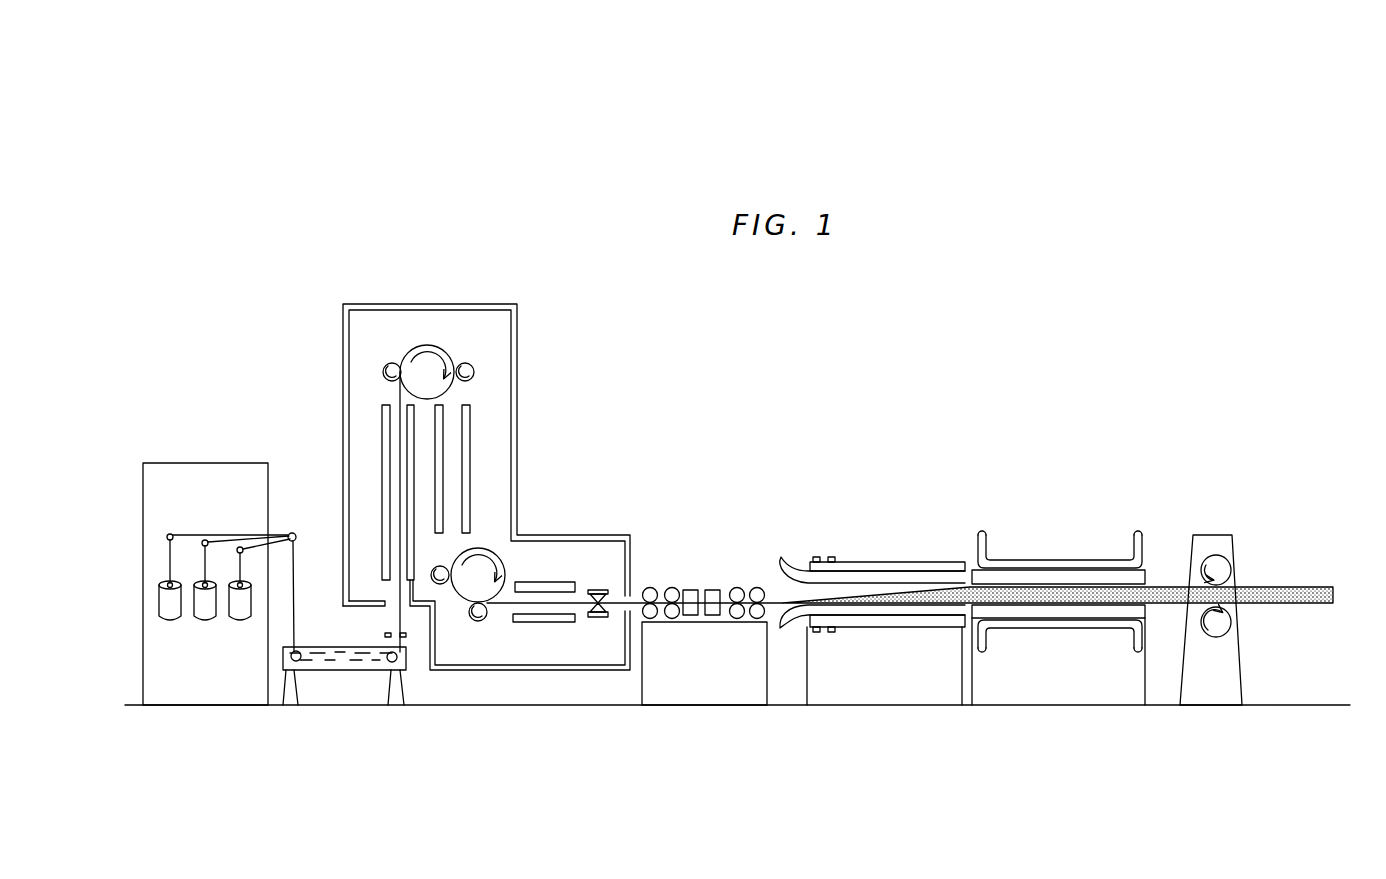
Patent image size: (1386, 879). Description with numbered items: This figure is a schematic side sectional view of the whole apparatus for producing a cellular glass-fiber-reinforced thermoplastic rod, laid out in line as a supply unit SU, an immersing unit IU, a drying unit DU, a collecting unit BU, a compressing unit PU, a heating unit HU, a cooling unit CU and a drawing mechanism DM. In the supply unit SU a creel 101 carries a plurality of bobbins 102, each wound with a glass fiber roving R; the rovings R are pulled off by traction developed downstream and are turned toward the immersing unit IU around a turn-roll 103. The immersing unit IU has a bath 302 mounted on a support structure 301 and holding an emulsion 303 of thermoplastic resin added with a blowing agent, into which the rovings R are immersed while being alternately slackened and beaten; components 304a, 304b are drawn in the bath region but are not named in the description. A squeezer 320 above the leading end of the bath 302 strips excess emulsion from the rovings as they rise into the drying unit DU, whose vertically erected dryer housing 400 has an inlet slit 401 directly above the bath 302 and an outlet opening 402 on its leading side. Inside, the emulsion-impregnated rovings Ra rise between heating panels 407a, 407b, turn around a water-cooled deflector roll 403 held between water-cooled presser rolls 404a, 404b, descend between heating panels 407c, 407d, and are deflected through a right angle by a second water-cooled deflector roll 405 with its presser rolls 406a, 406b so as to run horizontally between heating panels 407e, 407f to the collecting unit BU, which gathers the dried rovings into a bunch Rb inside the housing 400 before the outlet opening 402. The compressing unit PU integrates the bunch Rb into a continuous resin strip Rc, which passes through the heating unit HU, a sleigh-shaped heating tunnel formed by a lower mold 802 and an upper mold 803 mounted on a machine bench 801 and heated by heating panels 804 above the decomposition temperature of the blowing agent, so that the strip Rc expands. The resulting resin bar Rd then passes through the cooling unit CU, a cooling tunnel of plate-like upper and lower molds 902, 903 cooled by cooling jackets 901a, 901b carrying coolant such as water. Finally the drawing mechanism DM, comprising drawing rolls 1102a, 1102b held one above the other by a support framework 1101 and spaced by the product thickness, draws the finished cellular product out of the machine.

The creel 101 is at (200, 463).
The bobbins 102 is at (170, 622).
The turn-roll 103 is at (292, 533).
The glass fiber roving R is at (294, 580).
The support structure 301 is at (400, 692).
The bath 302 is at (270, 668).
The emulsion 303 is at (330, 647).
The bath guide roller 304a is at (288, 664).
The bath guide roller 304b is at (388, 664).
The squeezer 320 is at (406, 627).
The dryer housing 400 is at (520, 316).
The inlet slit 401 is at (376, 660).
The outlet opening 402 is at (598, 620).
The deflector roll 403 is at (432, 345).
The presser roll 404a is at (390, 363).
The presser roll 404b is at (475, 372).
The deflector roll 405 is at (492, 552).
The presser roll 406a is at (443, 585).
The presser roll 406b is at (488, 617).
The heating panel 407a is at (383, 440).
The heating panel 407b is at (418, 467).
The heating panel 407c is at (440, 410).
The heating panel 407d is at (472, 431).
The heating panel 407e is at (545, 582).
The heating panel 407f is at (575, 624).
The machine bench 801 is at (876, 680).
The lower mold 802 is at (925, 615).
The upper mold 803 is at (883, 572).
The heating panels 804 is at (848, 557).
The cooling jacket 901a is at (1072, 583).
The cooling jacket 901b is at (1053, 620).
The upper mold 902 is at (1052, 578).
The lower mold 903 is at (1093, 620).
The draw-off stand 1101 is at (1195, 700).
The drawing roll 1102a is at (1222, 568).
The drawing roll 1102b is at (1222, 624).
The supply unit SU is at (133, 686).
The immersing unit IU is at (326, 678).
The drying unit DU is at (363, 390).
The emulsion-impregnated rovings Ra is at (453, 470).
The bunch of rovings Rb is at (644, 590).
The resin strip Rc is at (768, 585).
The resin bar Rd is at (1030, 592).
The collecting unit BU is at (603, 583).
The compressing unit PU is at (707, 582).
The heating unit HU is at (943, 551).
The cooling unit CU is at (1115, 543).
The drawing mechanism DM is at (1217, 548).